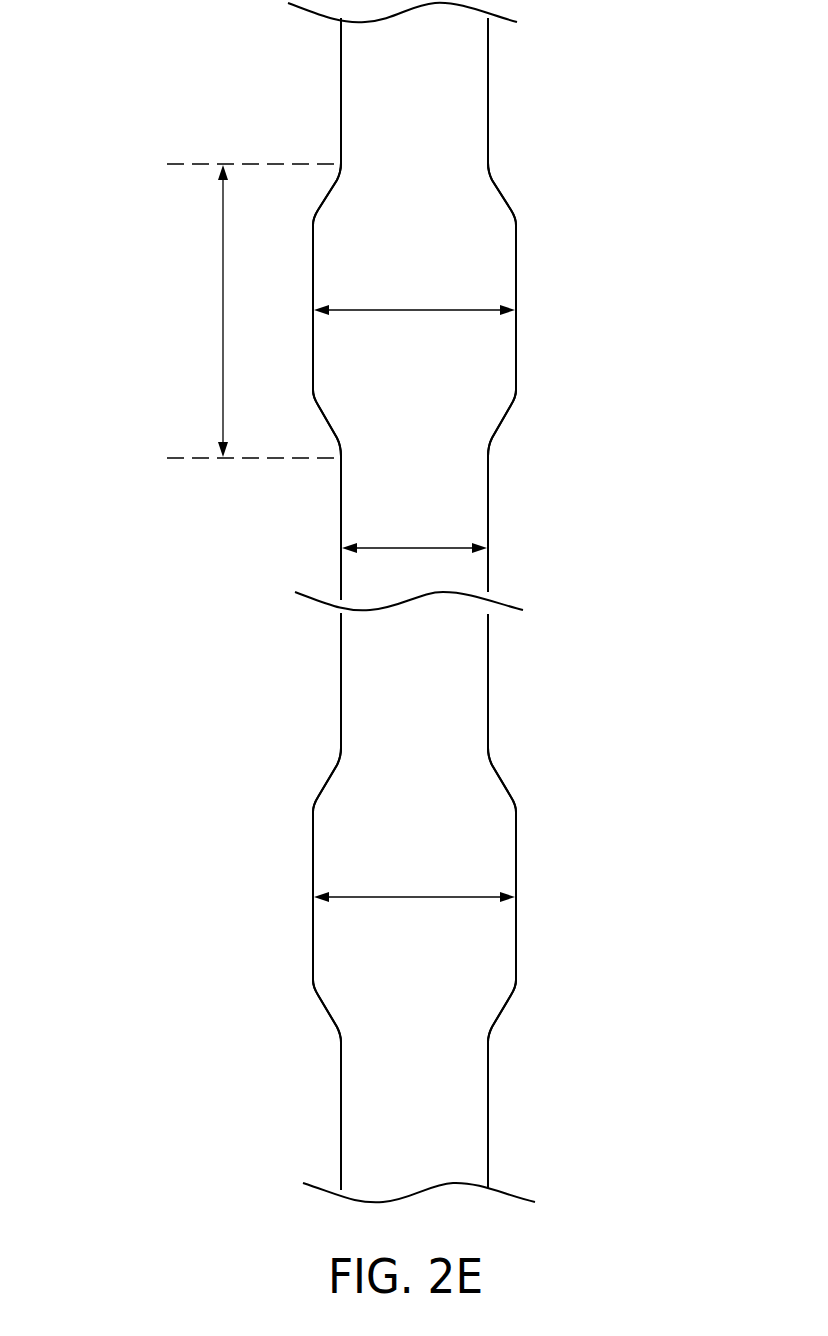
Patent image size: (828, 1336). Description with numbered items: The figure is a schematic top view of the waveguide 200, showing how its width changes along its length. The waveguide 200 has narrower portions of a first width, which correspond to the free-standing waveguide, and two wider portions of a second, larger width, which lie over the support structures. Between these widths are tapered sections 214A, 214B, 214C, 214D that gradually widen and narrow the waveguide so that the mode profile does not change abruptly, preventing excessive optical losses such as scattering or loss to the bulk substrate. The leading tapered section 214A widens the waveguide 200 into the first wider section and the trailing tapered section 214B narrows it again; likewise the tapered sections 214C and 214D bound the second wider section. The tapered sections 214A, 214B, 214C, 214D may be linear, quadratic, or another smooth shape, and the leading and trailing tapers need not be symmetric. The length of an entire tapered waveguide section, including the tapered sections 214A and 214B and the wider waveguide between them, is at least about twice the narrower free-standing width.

The waveguide 200 is at (135, 77).
The tapered section 214A is at (580, 155).
The tapered section 214B is at (580, 385).
The tapered section 214C is at (580, 742).
The tapered section 214D is at (580, 970).